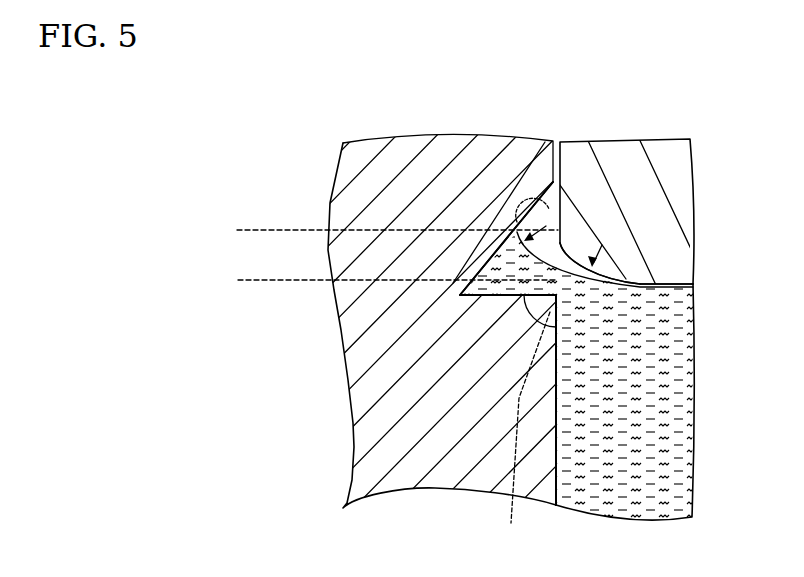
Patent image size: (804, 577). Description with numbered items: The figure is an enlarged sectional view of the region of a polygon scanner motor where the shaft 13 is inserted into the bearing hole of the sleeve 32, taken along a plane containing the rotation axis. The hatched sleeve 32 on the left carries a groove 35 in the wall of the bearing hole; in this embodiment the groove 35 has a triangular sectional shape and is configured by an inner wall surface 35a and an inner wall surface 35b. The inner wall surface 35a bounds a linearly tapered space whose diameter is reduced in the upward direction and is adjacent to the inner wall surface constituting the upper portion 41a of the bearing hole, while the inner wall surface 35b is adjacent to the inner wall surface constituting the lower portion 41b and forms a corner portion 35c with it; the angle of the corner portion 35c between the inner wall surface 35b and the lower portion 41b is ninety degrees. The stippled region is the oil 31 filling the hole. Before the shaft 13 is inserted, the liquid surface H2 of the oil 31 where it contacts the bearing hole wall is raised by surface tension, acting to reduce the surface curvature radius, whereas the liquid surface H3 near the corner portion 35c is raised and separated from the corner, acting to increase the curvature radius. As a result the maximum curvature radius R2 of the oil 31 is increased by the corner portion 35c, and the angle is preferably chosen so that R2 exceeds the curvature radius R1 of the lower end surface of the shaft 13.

The shaft 13 is at (658, 265).
The oil 31 is at (663, 409).
The sleeve 32 is at (372, 436).
The groove 35 is at (520, 245).
The inner wall surface 35a is at (543, 195).
The inner wall surface 35b is at (512, 295).
The corner portion 35c is at (560, 313).
The upper portion 41a is at (598, 148).
The lower portion 41b is at (560, 443).
The curvature radius of the lower end surface of the shaft R1 is at (603, 246).
The maximum value of the liquid surface curvature radius R2 is at (547, 228).
The liquid surface H2 is at (258, 229).
The liquid surface H3 is at (256, 279).